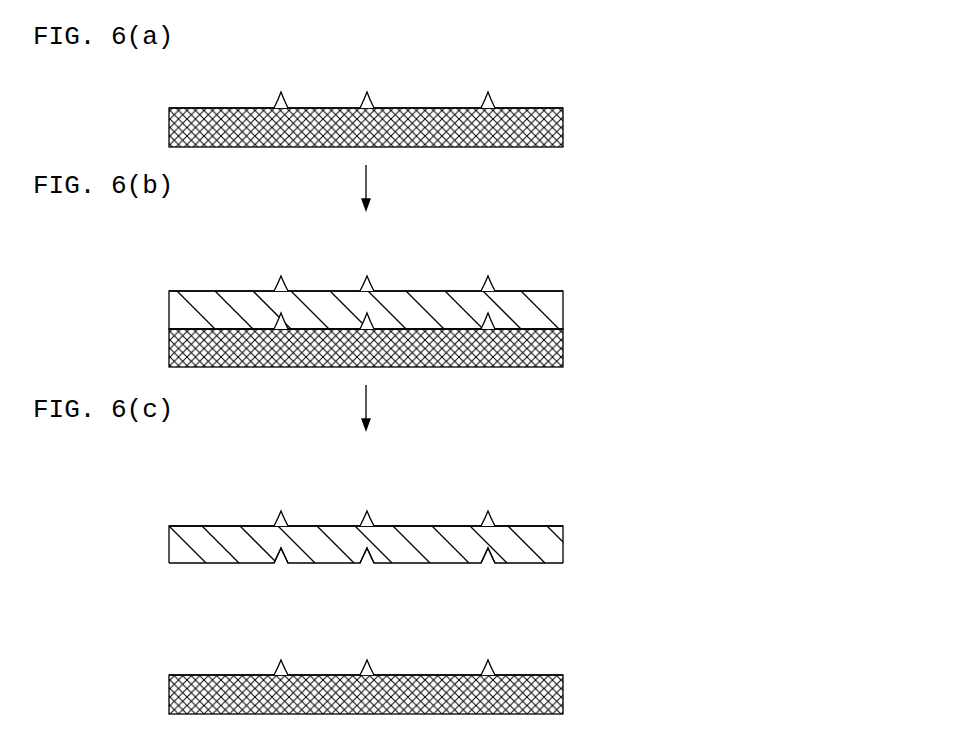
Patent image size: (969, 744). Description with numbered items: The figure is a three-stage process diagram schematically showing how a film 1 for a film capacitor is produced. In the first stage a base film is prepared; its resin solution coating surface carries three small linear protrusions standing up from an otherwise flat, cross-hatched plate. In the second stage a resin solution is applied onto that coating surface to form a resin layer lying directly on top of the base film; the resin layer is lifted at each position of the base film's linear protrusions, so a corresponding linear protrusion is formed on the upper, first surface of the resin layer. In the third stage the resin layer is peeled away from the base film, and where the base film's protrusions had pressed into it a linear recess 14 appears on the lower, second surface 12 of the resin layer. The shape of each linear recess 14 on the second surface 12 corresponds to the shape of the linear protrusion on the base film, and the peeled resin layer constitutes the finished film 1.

The film for a film capacitor 1 is at (390, 530).
The second surface 12 is at (539, 563).
The linear recess 14 is at (489, 561).